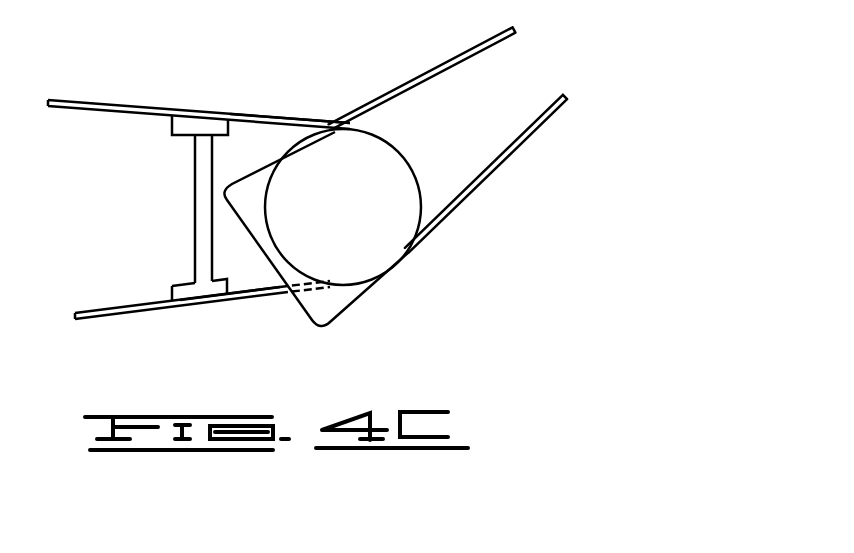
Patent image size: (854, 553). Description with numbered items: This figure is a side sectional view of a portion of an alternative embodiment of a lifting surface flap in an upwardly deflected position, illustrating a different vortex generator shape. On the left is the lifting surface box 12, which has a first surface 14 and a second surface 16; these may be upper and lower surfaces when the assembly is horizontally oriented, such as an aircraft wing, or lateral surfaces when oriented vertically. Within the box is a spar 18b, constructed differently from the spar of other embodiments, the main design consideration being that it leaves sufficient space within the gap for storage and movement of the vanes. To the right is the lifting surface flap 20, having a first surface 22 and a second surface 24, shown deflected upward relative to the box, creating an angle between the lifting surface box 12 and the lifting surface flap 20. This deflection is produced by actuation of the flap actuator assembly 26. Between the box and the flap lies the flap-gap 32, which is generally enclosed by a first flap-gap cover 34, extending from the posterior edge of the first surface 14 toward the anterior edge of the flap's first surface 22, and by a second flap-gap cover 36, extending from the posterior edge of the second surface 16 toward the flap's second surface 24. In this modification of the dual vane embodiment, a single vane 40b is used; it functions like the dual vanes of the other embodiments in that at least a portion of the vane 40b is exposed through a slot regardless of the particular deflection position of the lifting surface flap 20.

The lifting surface box 12 is at (169, 171).
The first surface 14 is at (123, 105).
The second surface 16 is at (125, 317).
The spar 18b is at (203, 205).
The lifting surface flap 20 is at (489, 175).
The first surface 22 is at (445, 60).
The second surface 24 is at (481, 196).
The flap actuator assembly 26 is at (378, 228).
The flap-gap 32 is at (233, 267).
The first flap-gap cover 34 is at (267, 114).
The second flap-gap cover 36 is at (243, 300).
The vane 40b is at (335, 303).